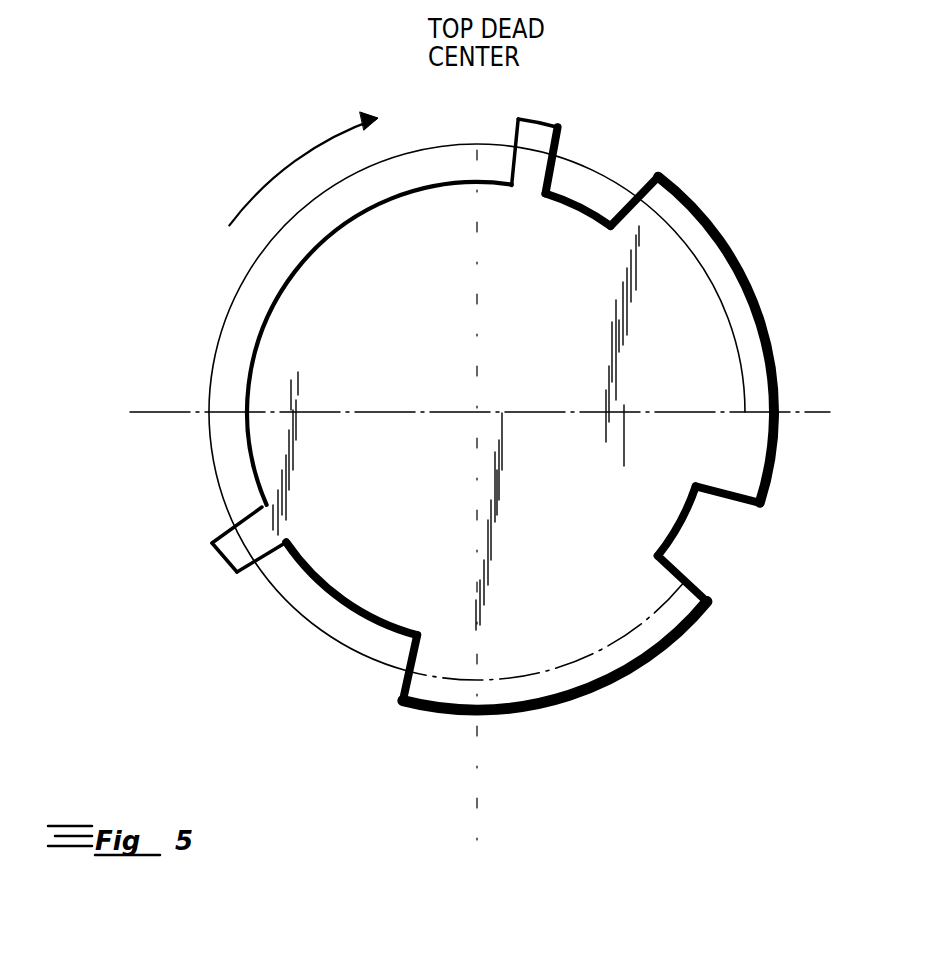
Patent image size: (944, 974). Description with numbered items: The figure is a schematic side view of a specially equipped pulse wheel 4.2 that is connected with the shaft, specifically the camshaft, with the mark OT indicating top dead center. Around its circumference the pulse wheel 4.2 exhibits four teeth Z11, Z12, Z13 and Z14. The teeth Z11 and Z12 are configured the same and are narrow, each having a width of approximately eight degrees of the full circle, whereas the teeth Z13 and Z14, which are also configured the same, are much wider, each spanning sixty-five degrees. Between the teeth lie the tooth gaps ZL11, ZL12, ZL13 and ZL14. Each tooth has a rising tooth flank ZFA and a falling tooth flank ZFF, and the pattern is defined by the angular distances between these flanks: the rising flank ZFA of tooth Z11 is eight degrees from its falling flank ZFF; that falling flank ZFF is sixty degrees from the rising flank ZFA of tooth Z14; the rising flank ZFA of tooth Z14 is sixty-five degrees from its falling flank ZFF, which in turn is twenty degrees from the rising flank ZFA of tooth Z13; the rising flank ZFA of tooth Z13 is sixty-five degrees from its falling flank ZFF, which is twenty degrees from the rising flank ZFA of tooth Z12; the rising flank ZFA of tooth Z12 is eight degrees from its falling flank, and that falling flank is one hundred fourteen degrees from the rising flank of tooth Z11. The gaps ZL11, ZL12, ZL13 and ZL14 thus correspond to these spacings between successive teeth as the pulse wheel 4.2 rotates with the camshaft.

The top dead center OT is at (477, 135).
The pulse wheel 4.2 is at (598, 716).
The tooth Z11 is at (222, 558).
The tooth Z12 is at (538, 131).
The tooth Z13 is at (730, 281).
The tooth Z14 is at (640, 638).
The tooth gap 11 ZL11 is at (267, 313).
The tooth gap 12 ZL12 is at (587, 206).
The tooth gap 13 ZL13 is at (688, 531).
The tooth gap 14 ZL14 is at (328, 598).
The falling tooth flank ZFF is at (515, 136).
The rising tooth flank ZFA is at (563, 142).